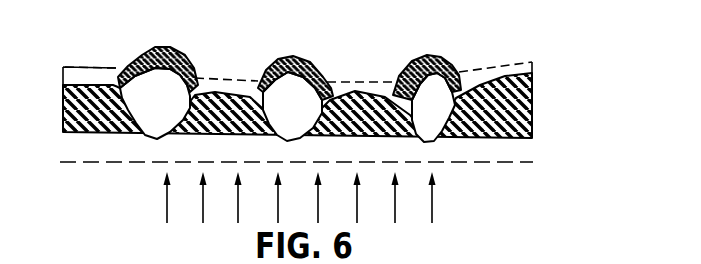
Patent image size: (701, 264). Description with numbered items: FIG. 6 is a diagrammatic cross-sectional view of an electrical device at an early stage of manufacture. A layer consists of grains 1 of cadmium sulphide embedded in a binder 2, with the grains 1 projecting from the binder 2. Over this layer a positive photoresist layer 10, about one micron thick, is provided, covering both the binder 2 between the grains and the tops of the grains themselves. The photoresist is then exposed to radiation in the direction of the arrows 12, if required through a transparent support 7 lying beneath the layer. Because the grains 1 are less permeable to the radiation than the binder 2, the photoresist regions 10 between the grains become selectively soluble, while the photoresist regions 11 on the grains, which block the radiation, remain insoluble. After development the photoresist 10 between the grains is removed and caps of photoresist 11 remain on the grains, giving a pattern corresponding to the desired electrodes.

The grains 1 is at (140, 90).
The binder 2 is at (224, 106).
The transparent support 7 is at (513, 155).
The photoresist layer 10 is at (363, 93).
The photoresist regions on the grains 11 is at (297, 56).
The arrows 12 is at (167, 201).